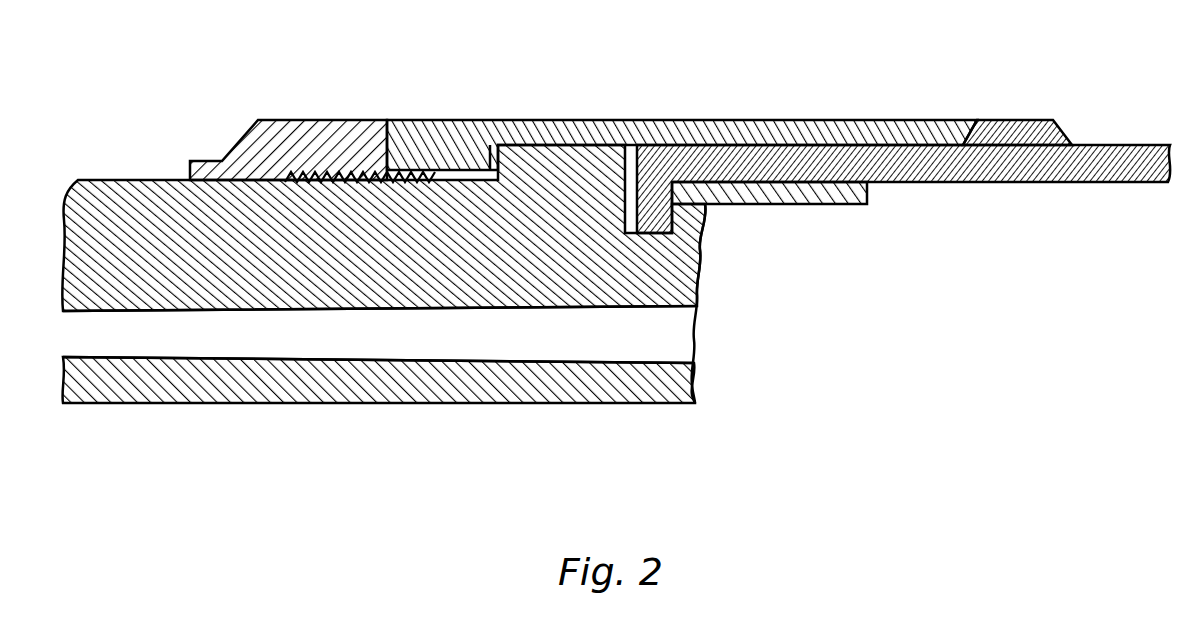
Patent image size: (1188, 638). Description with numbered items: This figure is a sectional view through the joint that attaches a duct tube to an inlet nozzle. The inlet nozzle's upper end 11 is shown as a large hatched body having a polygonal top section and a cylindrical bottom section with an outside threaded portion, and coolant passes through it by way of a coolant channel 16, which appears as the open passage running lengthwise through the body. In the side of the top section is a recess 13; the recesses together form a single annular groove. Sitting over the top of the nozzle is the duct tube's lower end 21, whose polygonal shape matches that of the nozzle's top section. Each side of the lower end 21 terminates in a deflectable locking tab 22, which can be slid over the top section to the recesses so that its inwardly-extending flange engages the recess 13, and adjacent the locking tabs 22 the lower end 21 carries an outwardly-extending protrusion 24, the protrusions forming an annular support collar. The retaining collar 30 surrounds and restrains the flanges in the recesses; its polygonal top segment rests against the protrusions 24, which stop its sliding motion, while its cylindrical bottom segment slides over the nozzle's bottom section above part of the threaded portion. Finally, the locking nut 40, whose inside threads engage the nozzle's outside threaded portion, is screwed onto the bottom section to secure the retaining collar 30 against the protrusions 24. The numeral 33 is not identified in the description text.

The inlet nozzle upper end 11 is at (150, 203).
The recess 13 is at (697, 300).
The coolant channel 16 is at (573, 345).
The duct tube lower end 21 is at (1102, 160).
The locking tab 22 is at (815, 195).
The outwardly-extending protrusion 24 is at (1005, 128).
The retaining collar 30 is at (443, 138).
The leg 33 is at (655, 237).
The locking nut 40 is at (298, 140).